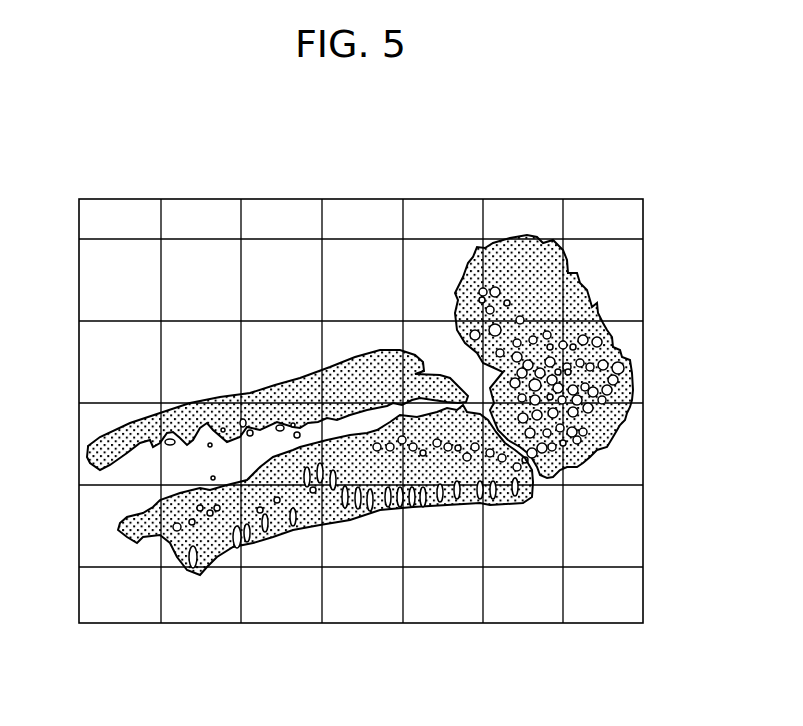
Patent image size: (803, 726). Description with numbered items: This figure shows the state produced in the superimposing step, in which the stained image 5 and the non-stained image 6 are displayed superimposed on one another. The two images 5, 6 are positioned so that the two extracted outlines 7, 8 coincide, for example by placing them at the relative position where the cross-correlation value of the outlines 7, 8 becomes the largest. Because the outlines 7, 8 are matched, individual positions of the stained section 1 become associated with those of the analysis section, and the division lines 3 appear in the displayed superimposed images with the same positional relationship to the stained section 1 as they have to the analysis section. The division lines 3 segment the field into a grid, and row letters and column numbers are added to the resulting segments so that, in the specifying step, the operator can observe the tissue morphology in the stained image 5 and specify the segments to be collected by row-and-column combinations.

The stained section 1 is at (592, 423).
The division lines 3 is at (563, 510).
The stained image 5 is at (394, 394).
The non-stained image 6 is at (645, 256).
The outline 7 is at (310, 520).
The outline 8 is at (358, 522).